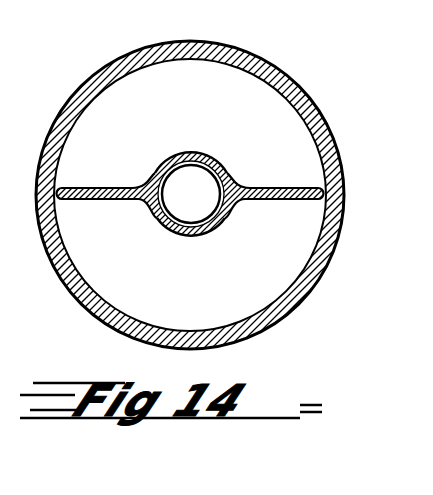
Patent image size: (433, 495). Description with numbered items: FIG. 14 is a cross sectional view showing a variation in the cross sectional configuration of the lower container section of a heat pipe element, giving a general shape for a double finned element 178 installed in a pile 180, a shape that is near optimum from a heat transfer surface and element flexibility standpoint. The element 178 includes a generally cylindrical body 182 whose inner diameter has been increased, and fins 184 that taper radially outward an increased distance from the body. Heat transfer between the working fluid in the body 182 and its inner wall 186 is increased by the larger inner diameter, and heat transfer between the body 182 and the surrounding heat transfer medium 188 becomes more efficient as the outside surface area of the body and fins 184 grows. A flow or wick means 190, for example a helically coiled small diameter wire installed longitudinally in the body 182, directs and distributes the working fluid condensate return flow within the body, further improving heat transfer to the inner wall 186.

The double finned element 178 is at (200, 236).
The pile 180 is at (294, 86).
The generally cylindrical body 182 is at (198, 153).
The fins 184 is at (302, 165).
The inner wall 186 is at (96, 98).
The heat transfer medium 188 is at (289, 240).
The flow or wick means 190 is at (215, 204).